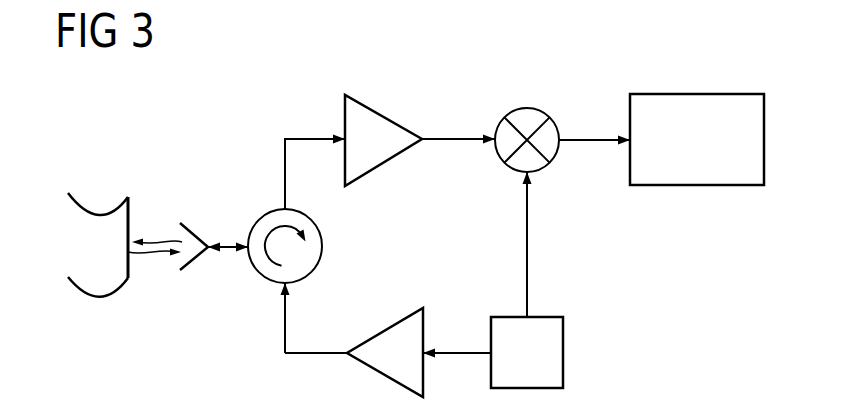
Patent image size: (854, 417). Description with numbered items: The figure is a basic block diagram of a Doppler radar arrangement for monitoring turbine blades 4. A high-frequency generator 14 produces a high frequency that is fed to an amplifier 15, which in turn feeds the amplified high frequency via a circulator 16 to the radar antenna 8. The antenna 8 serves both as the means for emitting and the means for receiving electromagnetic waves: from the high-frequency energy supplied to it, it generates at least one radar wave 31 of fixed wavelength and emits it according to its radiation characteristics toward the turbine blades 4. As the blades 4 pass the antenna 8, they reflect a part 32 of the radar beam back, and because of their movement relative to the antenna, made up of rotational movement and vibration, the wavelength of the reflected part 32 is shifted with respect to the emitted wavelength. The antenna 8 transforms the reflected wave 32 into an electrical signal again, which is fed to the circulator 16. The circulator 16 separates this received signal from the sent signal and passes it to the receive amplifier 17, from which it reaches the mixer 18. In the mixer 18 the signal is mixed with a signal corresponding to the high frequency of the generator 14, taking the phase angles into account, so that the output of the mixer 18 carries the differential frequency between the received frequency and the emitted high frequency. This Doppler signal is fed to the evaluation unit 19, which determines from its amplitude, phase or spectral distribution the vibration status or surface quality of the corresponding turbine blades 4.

The turbine blade 4 is at (85, 250).
The electromagnetic radar wave 31 is at (153, 240).
The reflected part of the electromagnetic wave 32 is at (153, 256).
The radar antenna 8 is at (193, 228).
The circulator 16 is at (323, 240).
The receive amplifier 17 is at (372, 104).
The mixer 18 is at (528, 108).
The evaluation unit 19 is at (696, 185).
The amplifier 15 is at (382, 327).
The high-frequency generator 14 is at (563, 347).